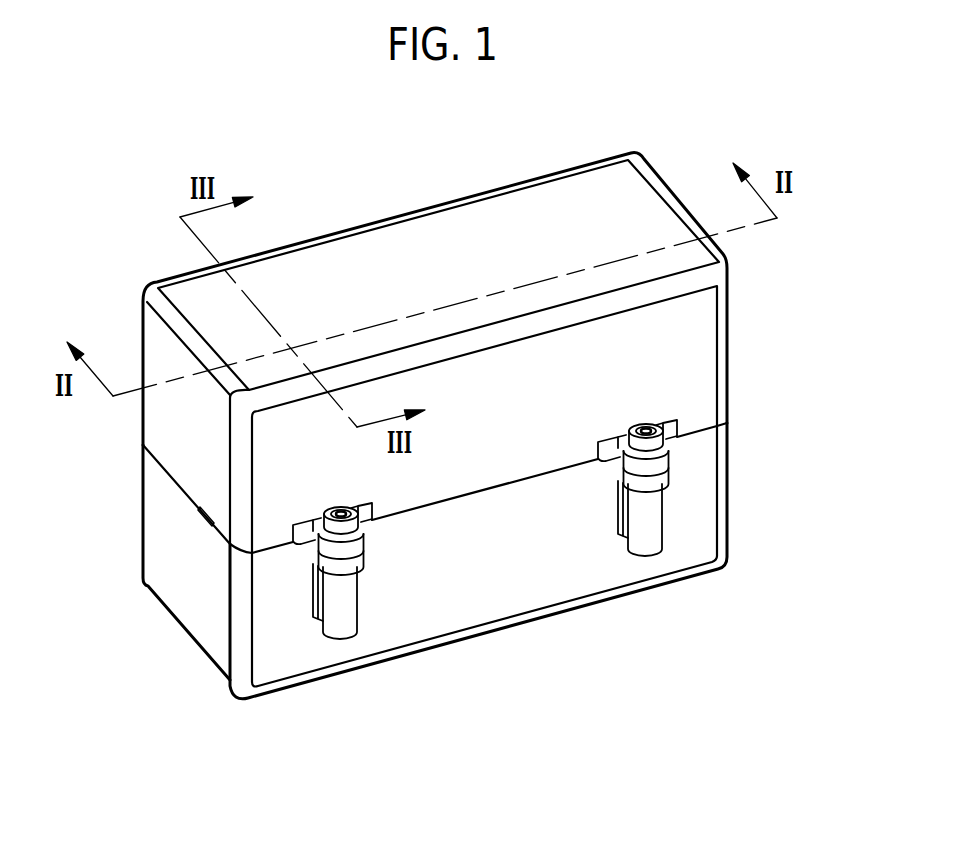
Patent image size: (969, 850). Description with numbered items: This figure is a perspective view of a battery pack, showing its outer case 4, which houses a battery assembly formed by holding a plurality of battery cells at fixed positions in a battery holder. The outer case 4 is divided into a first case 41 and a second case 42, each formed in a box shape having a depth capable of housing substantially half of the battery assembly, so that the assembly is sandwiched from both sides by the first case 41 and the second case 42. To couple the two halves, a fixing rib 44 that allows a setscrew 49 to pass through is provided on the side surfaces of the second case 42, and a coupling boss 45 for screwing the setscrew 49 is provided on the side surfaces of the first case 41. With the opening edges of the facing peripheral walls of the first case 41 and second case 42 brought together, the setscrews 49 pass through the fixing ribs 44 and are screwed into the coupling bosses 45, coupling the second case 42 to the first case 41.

The outer case 4 is at (517, 426).
The first case 41 is at (492, 561).
The second case 42 is at (697, 350).
The fixing rib 44 is at (361, 540).
The coupling boss 45 is at (364, 557).
The setscrew 49 is at (335, 508).